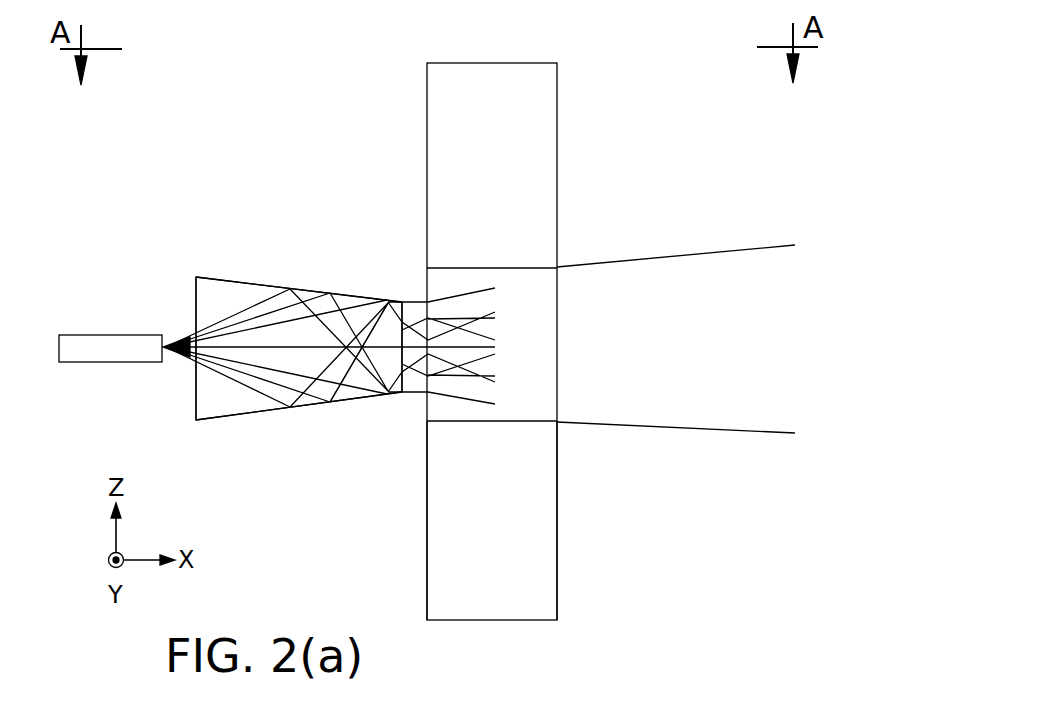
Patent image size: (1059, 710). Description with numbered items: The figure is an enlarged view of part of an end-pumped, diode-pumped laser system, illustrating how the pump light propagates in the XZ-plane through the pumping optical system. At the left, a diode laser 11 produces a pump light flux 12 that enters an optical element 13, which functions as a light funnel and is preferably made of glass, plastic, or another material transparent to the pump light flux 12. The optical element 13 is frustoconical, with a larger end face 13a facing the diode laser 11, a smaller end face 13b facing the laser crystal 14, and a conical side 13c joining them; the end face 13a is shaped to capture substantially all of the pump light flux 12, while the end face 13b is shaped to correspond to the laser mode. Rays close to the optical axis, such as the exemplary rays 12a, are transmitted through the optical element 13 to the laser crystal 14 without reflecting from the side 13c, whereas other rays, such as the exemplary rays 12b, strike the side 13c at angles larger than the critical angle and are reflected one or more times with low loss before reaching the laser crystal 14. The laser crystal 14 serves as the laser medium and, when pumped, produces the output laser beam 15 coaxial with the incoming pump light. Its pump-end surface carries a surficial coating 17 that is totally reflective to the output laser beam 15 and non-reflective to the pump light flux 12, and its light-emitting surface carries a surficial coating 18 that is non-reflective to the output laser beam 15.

The diode laser 11 is at (110, 347).
The pump light flux 12 is at (181, 337).
The exemplary rays 12a is at (450, 318).
The exemplary rays 12b is at (280, 388).
The optical element 13 is at (322, 262).
The end face 13a is at (196, 387).
The end face 13b is at (409, 305).
The conical side 13c is at (243, 283).
The laser crystal 14 is at (517, 155).
The output laser beam 15 is at (677, 393).
The surficial coating 17 is at (428, 565).
The surficial coating 18 is at (558, 580).